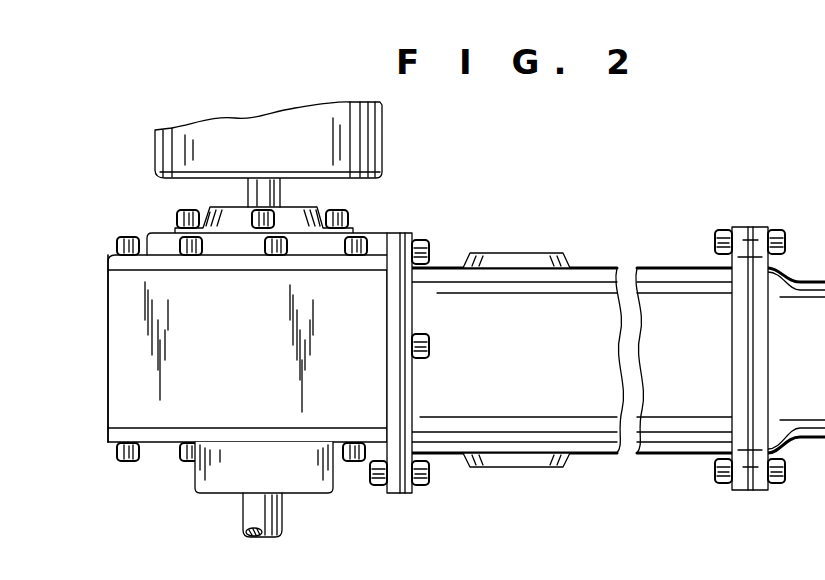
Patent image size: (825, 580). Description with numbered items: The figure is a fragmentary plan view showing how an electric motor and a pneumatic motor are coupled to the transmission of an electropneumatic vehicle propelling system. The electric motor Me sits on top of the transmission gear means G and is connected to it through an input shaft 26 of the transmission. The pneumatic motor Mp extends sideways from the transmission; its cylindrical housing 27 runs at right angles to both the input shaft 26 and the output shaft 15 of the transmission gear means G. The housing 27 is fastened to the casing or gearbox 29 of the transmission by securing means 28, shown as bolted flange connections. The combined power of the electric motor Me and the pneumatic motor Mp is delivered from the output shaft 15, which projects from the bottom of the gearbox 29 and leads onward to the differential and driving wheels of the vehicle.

The electric motor Me is at (158, 152).
The input shaft 26 is at (254, 197).
The gearbox 29 is at (118, 296).
The transmission gear means G is at (120, 389).
The output shaft 15 is at (242, 510).
The securing means 28 is at (430, 248).
The pneumatic motor Mp is at (598, 456).
The cylindrical housing 27 is at (673, 445).